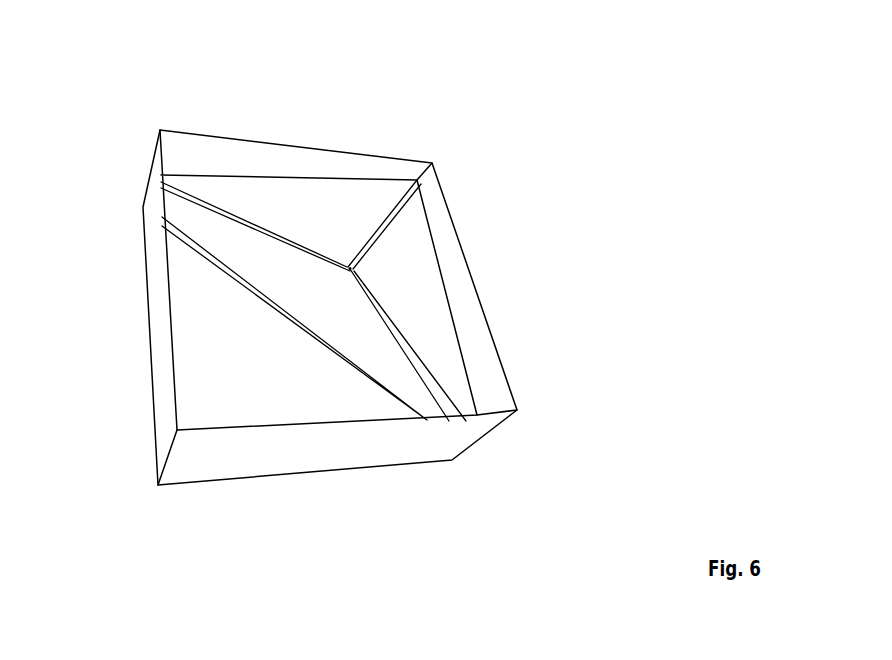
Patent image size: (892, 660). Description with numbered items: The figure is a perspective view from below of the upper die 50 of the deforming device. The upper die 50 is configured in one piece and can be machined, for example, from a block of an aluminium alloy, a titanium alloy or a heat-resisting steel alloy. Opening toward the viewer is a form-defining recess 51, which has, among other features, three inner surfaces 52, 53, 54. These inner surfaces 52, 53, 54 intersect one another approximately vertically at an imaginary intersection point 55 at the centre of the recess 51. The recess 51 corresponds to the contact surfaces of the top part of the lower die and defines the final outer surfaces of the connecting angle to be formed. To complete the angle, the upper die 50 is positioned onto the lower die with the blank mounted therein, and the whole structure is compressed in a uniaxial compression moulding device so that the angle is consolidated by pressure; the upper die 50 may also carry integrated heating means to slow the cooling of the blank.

The upper die 50 is at (186, 153).
The form-defining recess 51 is at (290, 289).
The inner surface 52 is at (308, 205).
The inner surface 53 is at (420, 270).
The inner surface 54 is at (357, 331).
The imaginary intersection point 55 is at (355, 234).